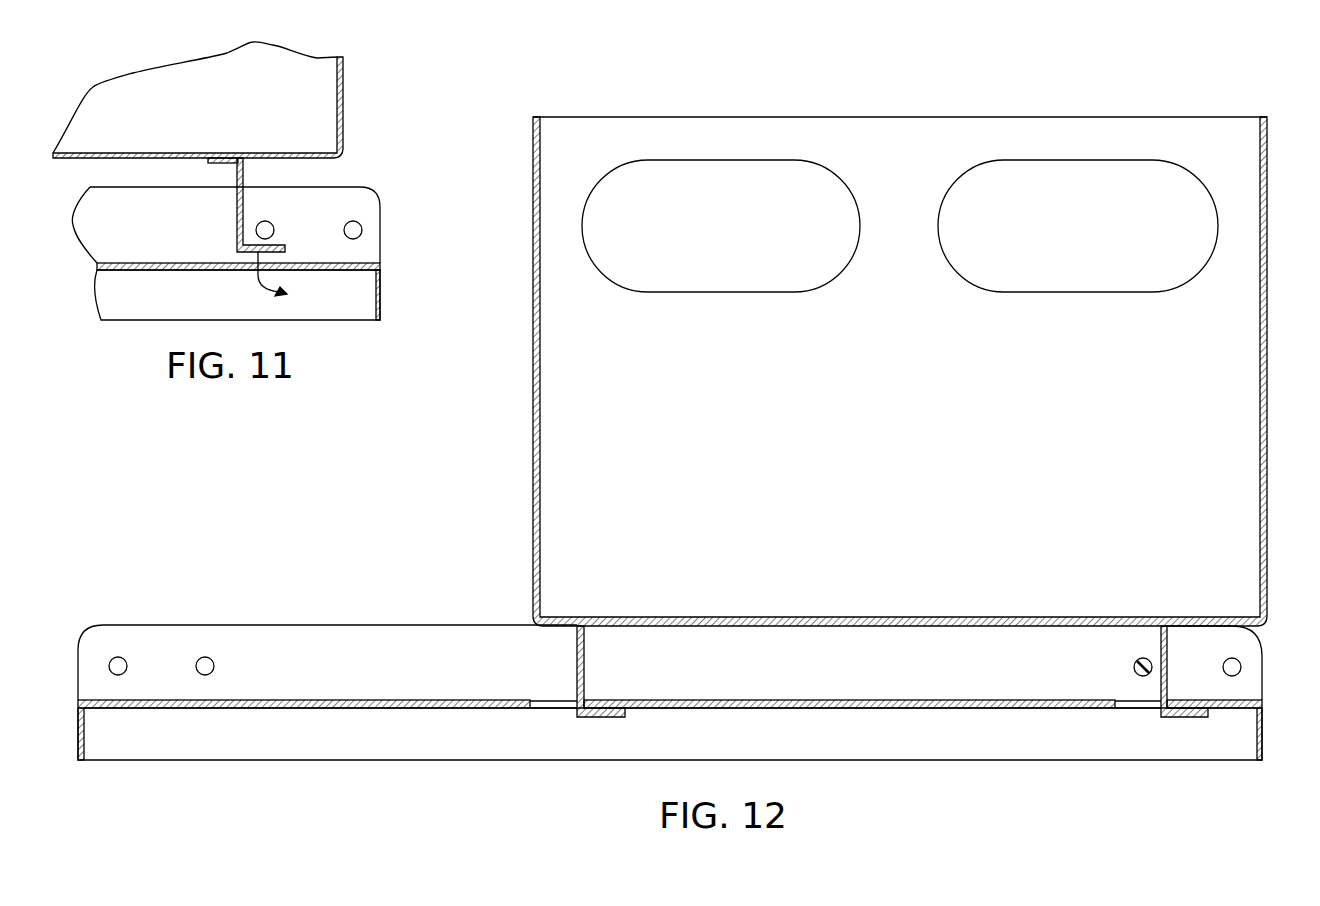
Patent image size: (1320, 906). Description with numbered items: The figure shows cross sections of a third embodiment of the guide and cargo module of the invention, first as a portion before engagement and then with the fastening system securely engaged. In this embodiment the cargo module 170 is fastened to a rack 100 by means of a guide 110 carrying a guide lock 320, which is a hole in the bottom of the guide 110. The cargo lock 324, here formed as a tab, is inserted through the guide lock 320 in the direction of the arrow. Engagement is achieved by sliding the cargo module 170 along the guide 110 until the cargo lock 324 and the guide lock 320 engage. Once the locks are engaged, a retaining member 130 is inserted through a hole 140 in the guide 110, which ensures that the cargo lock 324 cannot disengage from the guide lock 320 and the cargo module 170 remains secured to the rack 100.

In FIG. 11, the rack 100 is at (386, 300).
In FIG. 12, the rack 100 is at (1266, 740).
In FIG. 11, the guide 110 is at (354, 182).
In FIG. 12, the guide 110 is at (358, 624).
In FIG. 12, the retaining member 130 is at (1135, 670).
In FIG. 11, the hole 140 is at (265, 230).
In FIG. 12, the hole 140 is at (122, 665).
In FIG. 11, the cargo module 170 is at (178, 112).
In FIG. 12, the cargo module 170 is at (886, 434).
In FIG. 11, the guide lock 320 is at (247, 273).
In FIG. 12, the guide lock 320 is at (197, 710).
In FIG. 11, the cargo lock 324 is at (237, 218).
In FIG. 12, the cargo lock 324 is at (585, 662).